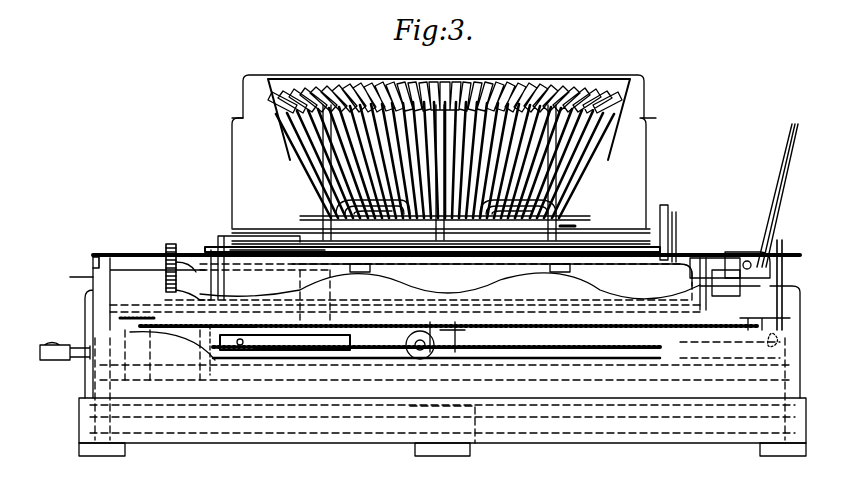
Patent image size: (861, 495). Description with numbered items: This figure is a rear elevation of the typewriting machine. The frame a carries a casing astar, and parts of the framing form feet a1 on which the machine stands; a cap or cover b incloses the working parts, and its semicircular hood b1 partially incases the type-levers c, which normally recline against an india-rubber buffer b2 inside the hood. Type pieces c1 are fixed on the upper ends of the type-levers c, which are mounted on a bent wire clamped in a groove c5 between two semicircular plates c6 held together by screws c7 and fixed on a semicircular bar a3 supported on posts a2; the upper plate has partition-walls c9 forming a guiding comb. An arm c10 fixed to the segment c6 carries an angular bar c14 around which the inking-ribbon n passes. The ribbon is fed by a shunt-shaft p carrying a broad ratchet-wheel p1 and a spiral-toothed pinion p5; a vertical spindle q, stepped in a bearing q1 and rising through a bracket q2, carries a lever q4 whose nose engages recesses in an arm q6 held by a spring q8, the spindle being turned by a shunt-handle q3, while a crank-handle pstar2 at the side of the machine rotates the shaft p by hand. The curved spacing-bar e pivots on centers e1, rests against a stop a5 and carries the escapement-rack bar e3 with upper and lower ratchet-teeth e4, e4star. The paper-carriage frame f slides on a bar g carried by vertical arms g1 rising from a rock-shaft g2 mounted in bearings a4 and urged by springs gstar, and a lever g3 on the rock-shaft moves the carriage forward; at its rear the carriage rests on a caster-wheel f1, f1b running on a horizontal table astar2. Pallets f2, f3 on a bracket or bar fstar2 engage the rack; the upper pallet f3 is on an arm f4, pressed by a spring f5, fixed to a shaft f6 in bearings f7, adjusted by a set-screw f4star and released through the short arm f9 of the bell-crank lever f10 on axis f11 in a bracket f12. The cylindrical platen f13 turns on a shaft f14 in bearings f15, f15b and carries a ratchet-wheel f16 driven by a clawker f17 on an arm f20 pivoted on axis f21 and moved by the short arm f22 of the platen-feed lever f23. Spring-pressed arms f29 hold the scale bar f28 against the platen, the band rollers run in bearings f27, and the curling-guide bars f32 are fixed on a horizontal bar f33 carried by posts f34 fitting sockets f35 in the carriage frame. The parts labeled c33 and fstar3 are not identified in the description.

The semicircular hood or shield b1 is at (439, 151).
The india-rubber cushion or buffer b2 is at (598, 128).
The type-levers c is at (445, 160).
The type pieces or blocks c1 is at (466, 70).
The curling guide bars f32 is at (575, 152).
The groove c5 is at (410, 205).
The vertical partition-walls c9 is at (498, 184).
The screws c7 is at (590, 212).
The semicircular plates c6 is at (575, 226).
The arm c10 is at (350, 240).
The inking-ribbon n is at (426, 257).
The angularly-disposed bar c14 is at (489, 257).
The scale bar f28 is at (640, 224).
The bar c33 is at (624, 253).
The bearings f27 is at (656, 253).
The horizontal bar f33 is at (432, 247).
The caster-wheel f1 is at (222, 245).
The arms f29 is at (205, 246).
The bearings f15 is at (170, 244).
The bar g is at (448, 290).
The vertical arms g1 is at (441, 285).
The cap or cover b is at (808, 296).
The semicircular bar a3 is at (290, 270).
The posts a2 is at (359, 328).
The paper-carriage frame f is at (452, 286).
The cylindrical platen f13 is at (456, 291).
The platen shaft or spindle f14 is at (234, 265).
The axis of motion f21 is at (252, 317).
The bracket or bar fstar2 is at (479, 284).
The f*** fstar3 is at (520, 265).
The arm f4 is at (585, 326).
The bearings f7 is at (410, 315).
The upper ratchet-teeth e4 is at (369, 317).
The spring f5 is at (525, 330).
The centers of motion e1 is at (118, 297).
The bracket q2 is at (176, 297).
The stop a5 is at (146, 317).
The holes or sockets f35 is at (430, 312).
The ratchet-wheel f16 is at (664, 210).
The clawker or driver f17 is at (685, 237).
The legs or posts f34 is at (710, 223).
The arm or lever f20 is at (715, 255).
The short arm f22 is at (739, 235).
The short arm f9 is at (747, 257).
The platen-feed lever f23 is at (800, 137).
The bell-crank releasing lever f10 is at (774, 215).
The axis of motion f11 is at (768, 240).
The bracket f12 is at (736, 283).
The bearings f15b is at (698, 284).
The curved spacing-bar e is at (765, 315).
The springs gstar is at (780, 345).
The frame a is at (795, 380).
The casing astar is at (735, 383).
The bearings a4 is at (790, 405).
The feet a1 is at (451, 458).
The rock-shaft g2 is at (620, 438).
The lever g3 is at (452, 424).
The escapement-rack bar e3 is at (450, 339).
The lower ratchet-teeth e4star is at (595, 345).
The upper pallet f3 is at (459, 337).
The shaft or spindle f6 is at (730, 347).
The set-screw f4star is at (478, 379).
The lower pallet f2 is at (447, 381).
The caster-wheel f1b is at (431, 381).
The broad ratchet-wheel p1 is at (412, 381).
The pinion p5 is at (394, 381).
The shunt-shaft p is at (325, 355).
The horizontal table astar2 is at (292, 356).
The bearing q1 is at (222, 358).
The vertical spindle q is at (208, 383).
The lever q4 is at (193, 360).
The recessed arm q6 is at (159, 360).
The spring q8 is at (132, 360).
The shunt-handle q3 is at (172, 345).
The crank-handle pstar2 is at (65, 362).